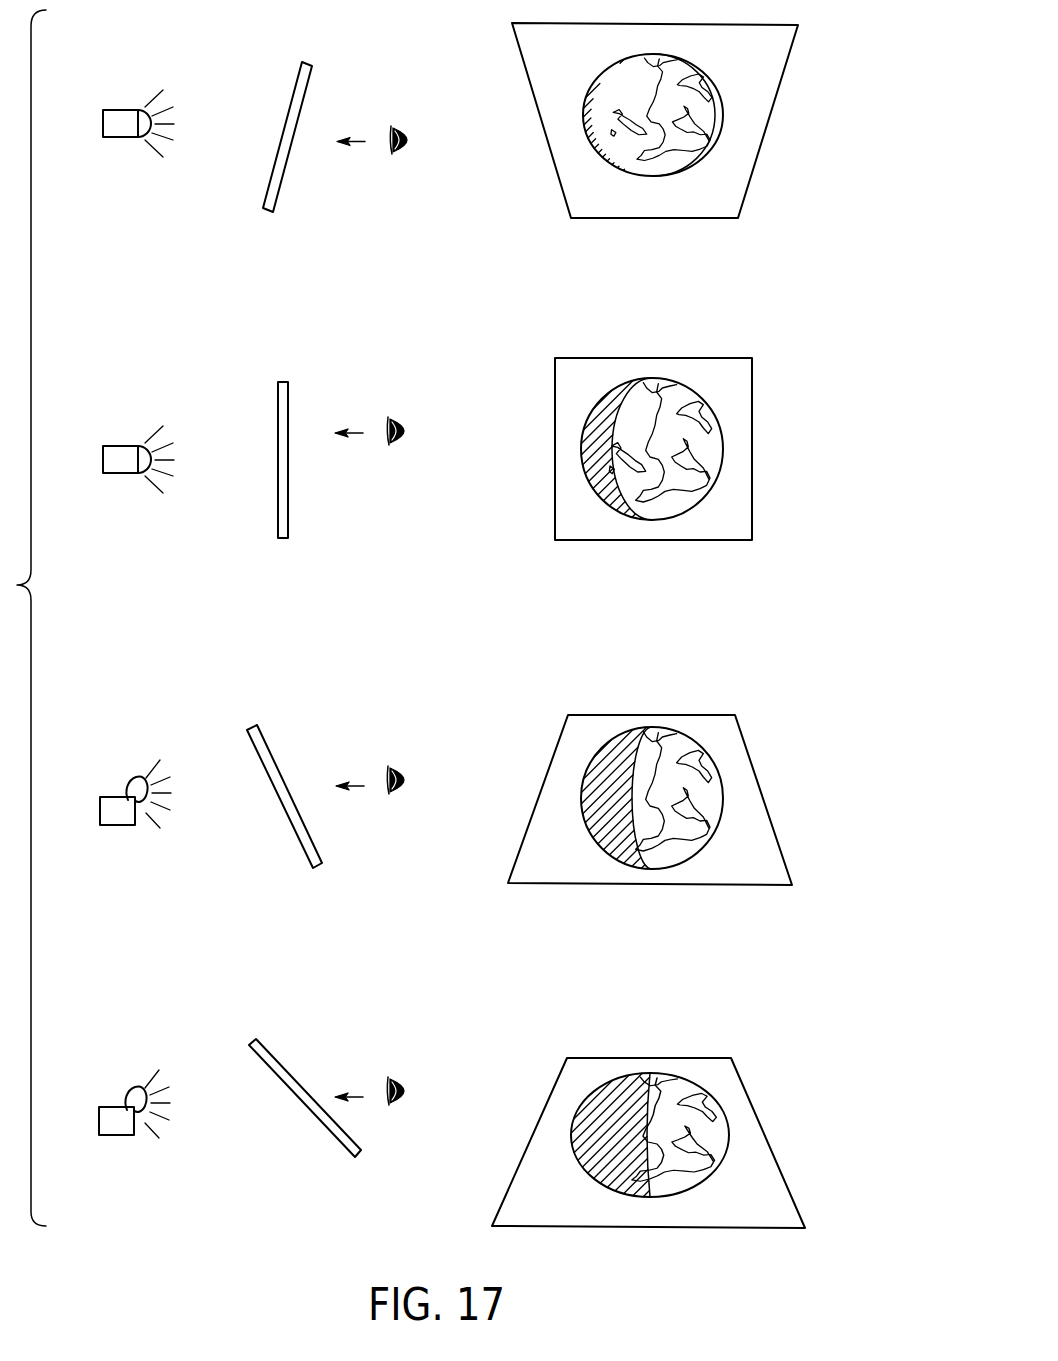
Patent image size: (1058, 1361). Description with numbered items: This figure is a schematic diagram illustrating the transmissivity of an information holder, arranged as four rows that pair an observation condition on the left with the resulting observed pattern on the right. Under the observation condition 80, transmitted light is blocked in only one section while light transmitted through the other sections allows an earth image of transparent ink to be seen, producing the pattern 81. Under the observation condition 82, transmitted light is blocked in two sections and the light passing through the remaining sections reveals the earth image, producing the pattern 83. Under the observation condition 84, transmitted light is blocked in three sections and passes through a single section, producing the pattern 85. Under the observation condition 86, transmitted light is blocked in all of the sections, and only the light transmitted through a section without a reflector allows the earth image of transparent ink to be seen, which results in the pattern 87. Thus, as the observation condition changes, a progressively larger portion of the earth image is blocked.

The observation condition 80 is at (122, 58).
The pattern 81 is at (810, 62).
The observation condition 82 is at (120, 388).
The pattern 83 is at (808, 392).
The observation condition 84 is at (119, 717).
The pattern 85 is at (808, 721).
The observation condition 86 is at (118, 1028).
The pattern 87 is at (806, 1033).